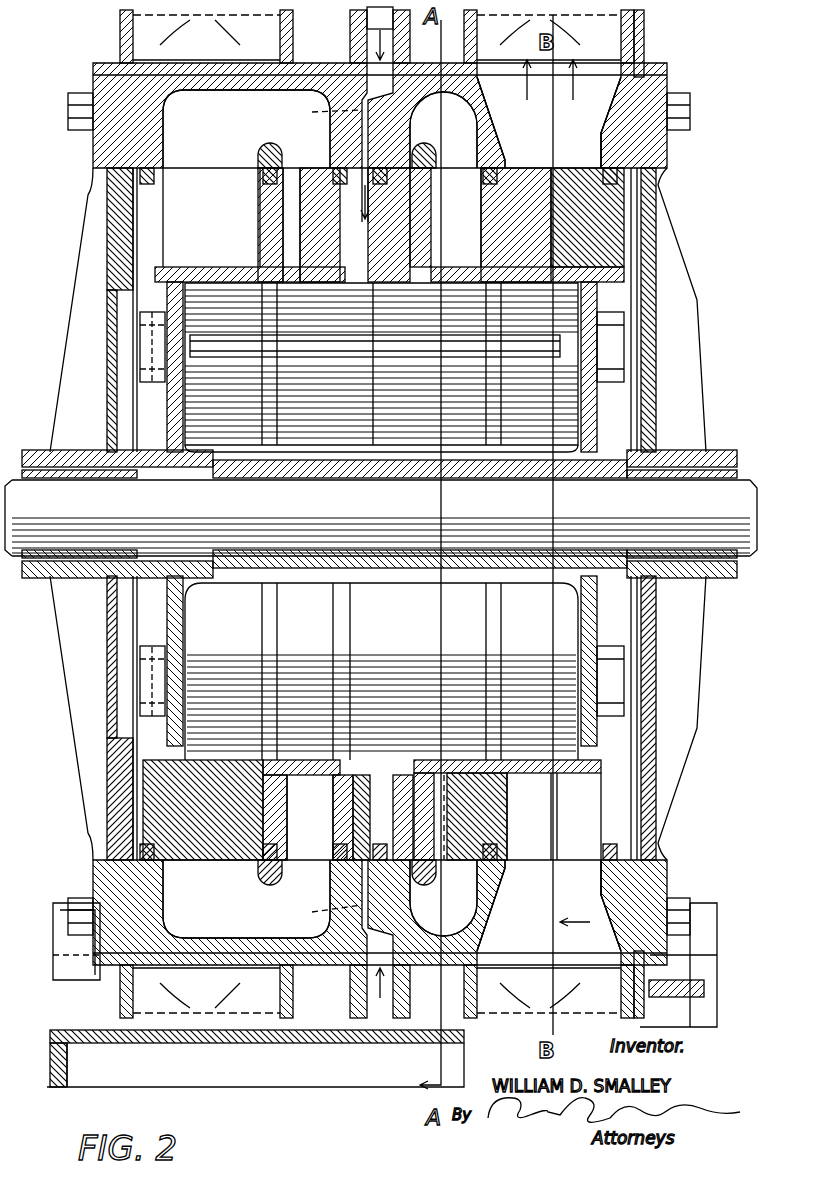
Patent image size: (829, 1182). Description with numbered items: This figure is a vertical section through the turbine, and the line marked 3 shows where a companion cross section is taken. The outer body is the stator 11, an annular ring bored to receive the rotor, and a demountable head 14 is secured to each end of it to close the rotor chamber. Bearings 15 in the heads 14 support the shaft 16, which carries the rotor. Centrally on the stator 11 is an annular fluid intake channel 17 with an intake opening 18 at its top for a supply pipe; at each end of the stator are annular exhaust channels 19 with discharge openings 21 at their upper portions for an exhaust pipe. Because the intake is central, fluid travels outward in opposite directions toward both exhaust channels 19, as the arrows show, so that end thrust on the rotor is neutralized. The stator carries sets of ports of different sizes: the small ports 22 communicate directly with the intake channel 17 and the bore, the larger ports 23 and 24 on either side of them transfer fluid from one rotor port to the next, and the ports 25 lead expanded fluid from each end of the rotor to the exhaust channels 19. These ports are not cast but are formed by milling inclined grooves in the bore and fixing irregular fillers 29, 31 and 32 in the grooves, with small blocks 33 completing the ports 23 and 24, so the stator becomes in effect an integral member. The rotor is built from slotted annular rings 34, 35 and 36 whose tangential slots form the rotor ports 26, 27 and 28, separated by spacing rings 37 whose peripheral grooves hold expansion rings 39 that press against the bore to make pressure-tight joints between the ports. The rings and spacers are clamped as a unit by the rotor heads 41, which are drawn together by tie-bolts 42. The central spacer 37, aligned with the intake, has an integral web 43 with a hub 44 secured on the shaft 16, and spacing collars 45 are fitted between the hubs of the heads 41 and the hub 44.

The section line 3- 3 is at (369, 170).
The stator 11 is at (640, 56).
The demountable head 14 is at (100, 255).
The bearings 15 is at (68, 458).
The shaft 16 is at (75, 500).
The annular fluid intake channel 17 is at (370, 40).
The intake opening 18 is at (367, 18).
The annular exhaust channels 19 is at (145, 46).
The discharge openings 21 is at (135, 14).
The ports 22 is at (325, 513).
The ports 23 is at (459, 140).
The ports 24 is at (272, 115).
The ports 25 is at (549, 505).
The rotor port 26 is at (363, 209).
The rotor port 27 is at (455, 514).
The rotor port 28 is at (378, 514).
The filler 29 is at (130, 130).
The filler 31 is at (462, 88).
The filler 32 is at (620, 135).
The small blocks 33 is at (450, 887).
The annular ring 34 is at (568, 216).
The annular ring 35 is at (509, 795).
The annular ring 36 is at (415, 206).
The spacing rings 37 is at (333, 228).
The expansion rings 39 is at (155, 178).
The rotor heads 41 is at (178, 405).
The tie-bolts 42 is at (242, 352).
The web 43 is at (373, 417).
The hub 44 is at (368, 460).
The spacing collars 45 is at (296, 580).